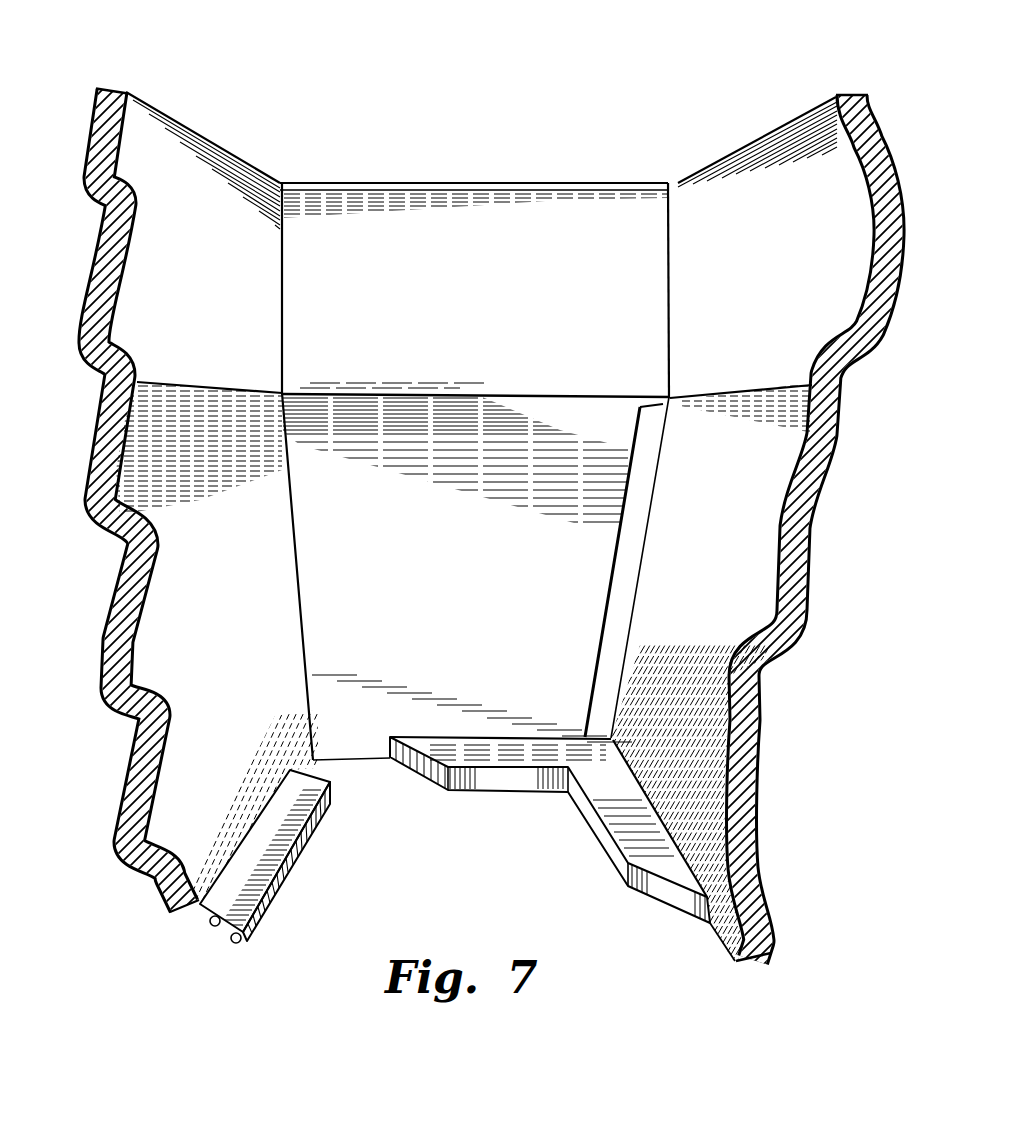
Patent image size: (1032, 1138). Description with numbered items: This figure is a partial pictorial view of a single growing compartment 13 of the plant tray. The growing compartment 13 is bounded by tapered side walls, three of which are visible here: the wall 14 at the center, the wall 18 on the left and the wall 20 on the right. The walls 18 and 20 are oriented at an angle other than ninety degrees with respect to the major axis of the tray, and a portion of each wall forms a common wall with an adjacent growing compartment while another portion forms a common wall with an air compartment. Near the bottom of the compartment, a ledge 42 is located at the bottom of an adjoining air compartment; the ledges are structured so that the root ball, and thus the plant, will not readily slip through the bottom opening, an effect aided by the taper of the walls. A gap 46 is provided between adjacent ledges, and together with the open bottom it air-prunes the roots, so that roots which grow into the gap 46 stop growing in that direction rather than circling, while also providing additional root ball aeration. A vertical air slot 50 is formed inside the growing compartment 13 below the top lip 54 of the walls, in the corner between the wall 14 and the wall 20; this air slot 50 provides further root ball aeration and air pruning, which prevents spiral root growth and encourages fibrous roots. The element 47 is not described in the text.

The growing compartment 13 is at (495, 501).
The wall 14 is at (520, 235).
The wall 18 is at (217, 172).
The wall 20 is at (793, 193).
The ledge 42 is at (647, 833).
The gap 46 is at (360, 838).
The support bar 47 is at (253, 870).
The air slot 50 is at (618, 567).
The top lip 54 is at (633, 183).